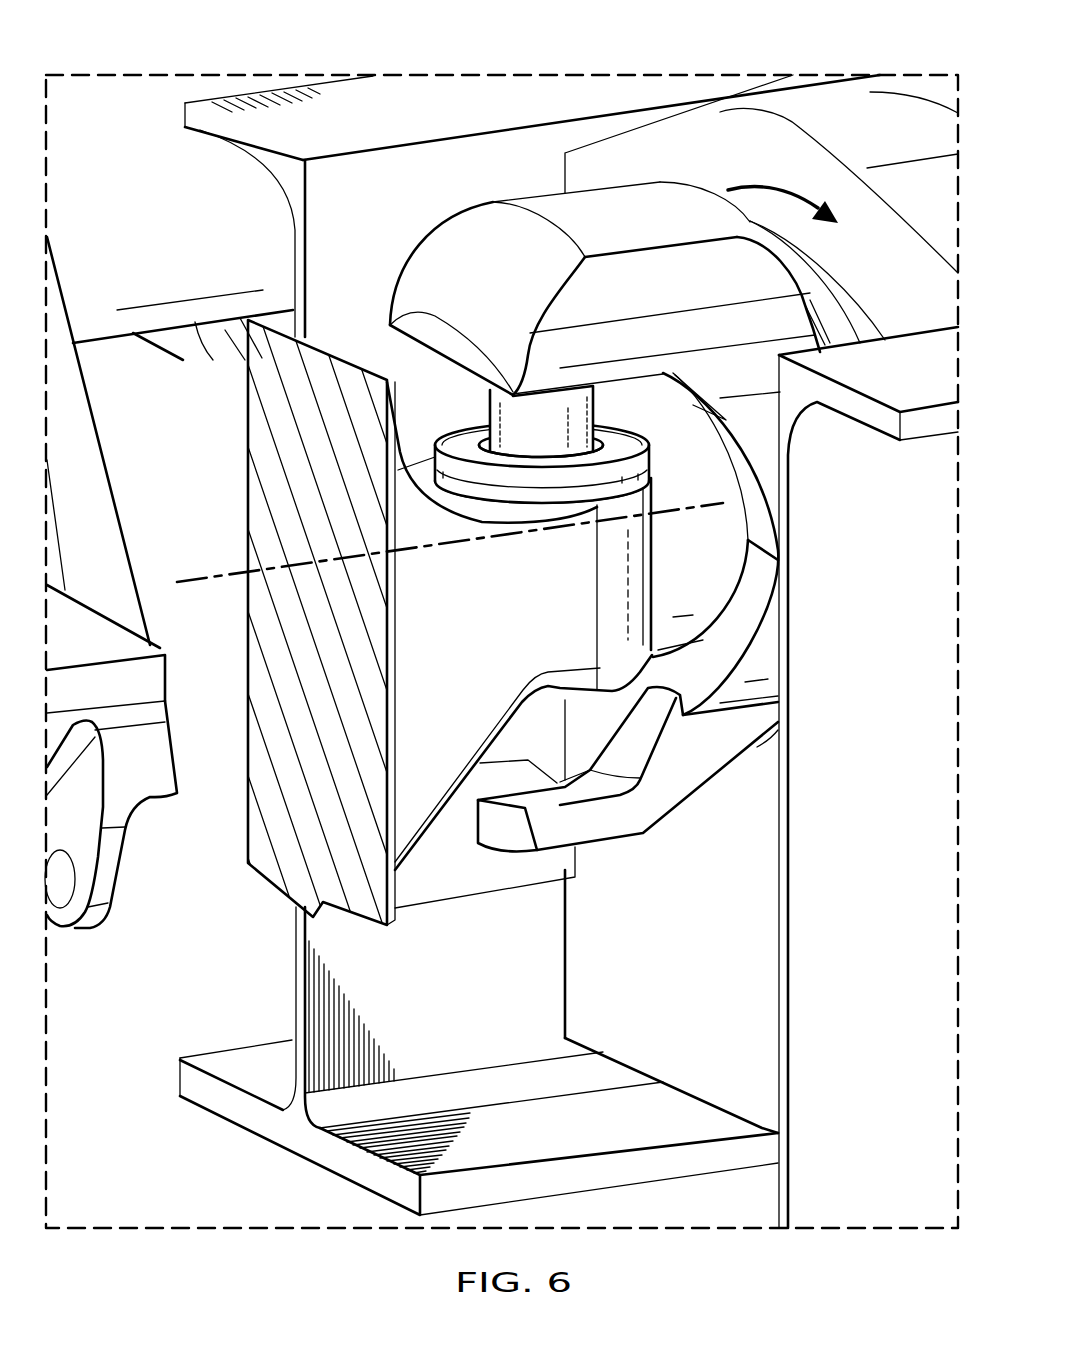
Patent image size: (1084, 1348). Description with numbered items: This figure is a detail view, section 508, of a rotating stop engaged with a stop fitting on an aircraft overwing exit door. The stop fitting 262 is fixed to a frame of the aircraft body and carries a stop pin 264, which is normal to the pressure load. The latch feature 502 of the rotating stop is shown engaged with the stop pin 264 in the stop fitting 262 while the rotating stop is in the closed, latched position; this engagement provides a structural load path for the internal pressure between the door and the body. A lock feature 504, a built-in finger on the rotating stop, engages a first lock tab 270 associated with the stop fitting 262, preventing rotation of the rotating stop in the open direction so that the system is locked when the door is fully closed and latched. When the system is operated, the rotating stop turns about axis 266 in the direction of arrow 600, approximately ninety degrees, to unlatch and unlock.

The section 508 is at (703, 70).
The arrow 600 is at (760, 178).
The latch feature 502 is at (428, 246).
The stop pin 264 is at (487, 410).
The axis 266 is at (196, 575).
The stop fitting 262 is at (515, 633).
The first lock tab 270 is at (508, 773).
The lock feature 504 is at (598, 832).